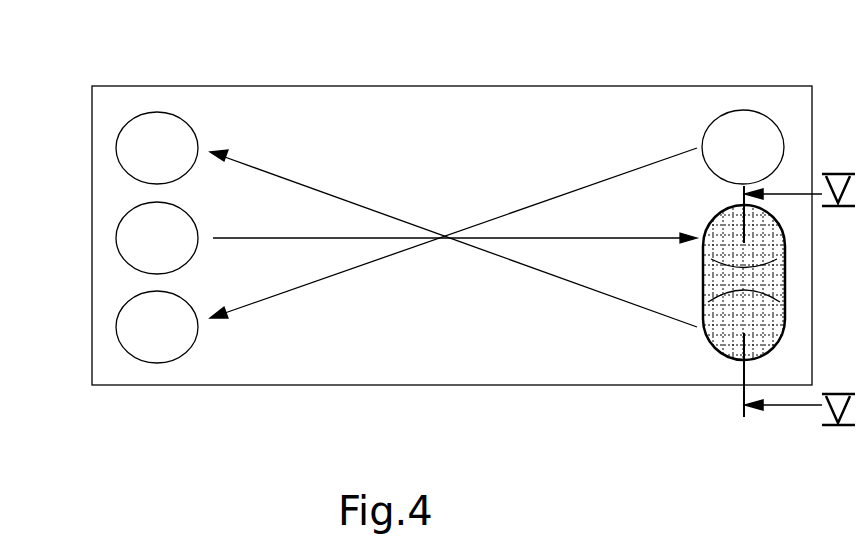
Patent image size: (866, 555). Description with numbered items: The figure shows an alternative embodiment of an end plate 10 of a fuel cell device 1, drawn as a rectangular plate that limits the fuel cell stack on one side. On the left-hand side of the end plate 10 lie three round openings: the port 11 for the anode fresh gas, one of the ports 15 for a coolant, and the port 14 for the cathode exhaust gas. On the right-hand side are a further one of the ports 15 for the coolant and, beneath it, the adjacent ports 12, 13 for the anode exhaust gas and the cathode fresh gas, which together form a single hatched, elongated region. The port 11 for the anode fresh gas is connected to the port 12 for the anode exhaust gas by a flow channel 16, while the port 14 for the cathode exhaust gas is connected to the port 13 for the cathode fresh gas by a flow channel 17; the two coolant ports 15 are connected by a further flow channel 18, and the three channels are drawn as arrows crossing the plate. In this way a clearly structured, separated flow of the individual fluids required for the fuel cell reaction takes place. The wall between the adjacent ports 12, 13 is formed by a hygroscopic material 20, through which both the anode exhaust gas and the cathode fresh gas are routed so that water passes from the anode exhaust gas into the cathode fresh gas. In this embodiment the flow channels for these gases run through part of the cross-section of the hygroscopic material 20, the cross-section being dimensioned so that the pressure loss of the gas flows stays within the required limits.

The end plate 10 is at (411, 146).
The port for the cathode exhaust gas 14 is at (159, 137).
The port for the anode fresh gas 11 is at (157, 250).
The ports for a coolant 15 is at (172, 343).
The flow channel 16 is at (312, 238).
The flow channel 17 is at (513, 262).
The further flow channel 18 is at (390, 258).
The fuel cell device 1 is at (743, 320).
The port for the anode exhaust gas 12 is at (763, 230).
The port for the cathode fresh gas 13 is at (773, 327).
The hygroscopic material 20 is at (768, 278).